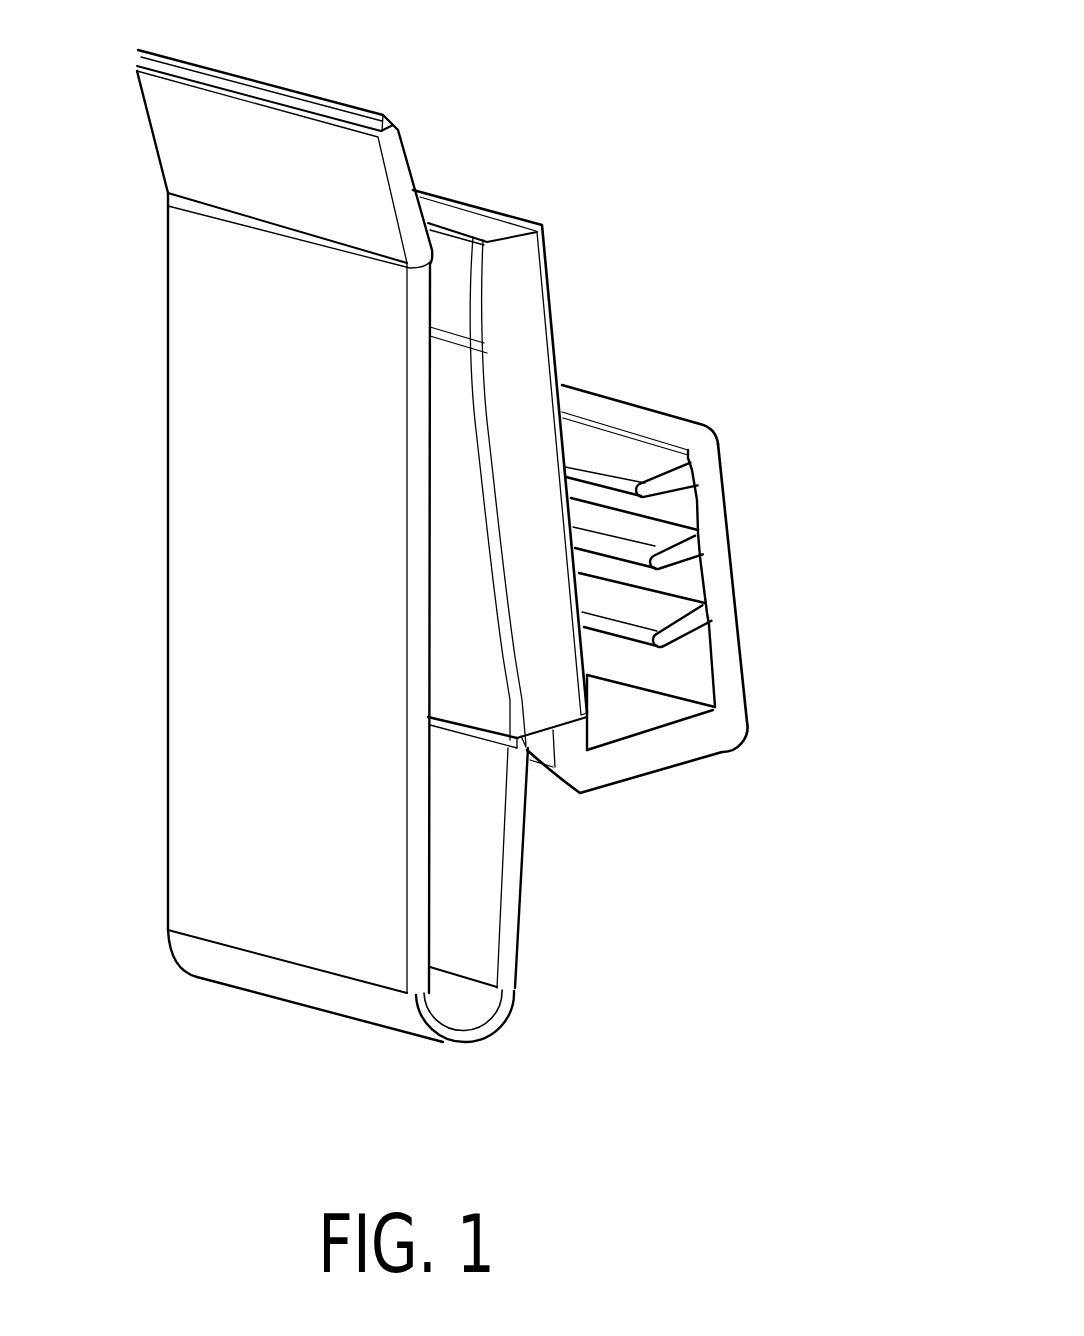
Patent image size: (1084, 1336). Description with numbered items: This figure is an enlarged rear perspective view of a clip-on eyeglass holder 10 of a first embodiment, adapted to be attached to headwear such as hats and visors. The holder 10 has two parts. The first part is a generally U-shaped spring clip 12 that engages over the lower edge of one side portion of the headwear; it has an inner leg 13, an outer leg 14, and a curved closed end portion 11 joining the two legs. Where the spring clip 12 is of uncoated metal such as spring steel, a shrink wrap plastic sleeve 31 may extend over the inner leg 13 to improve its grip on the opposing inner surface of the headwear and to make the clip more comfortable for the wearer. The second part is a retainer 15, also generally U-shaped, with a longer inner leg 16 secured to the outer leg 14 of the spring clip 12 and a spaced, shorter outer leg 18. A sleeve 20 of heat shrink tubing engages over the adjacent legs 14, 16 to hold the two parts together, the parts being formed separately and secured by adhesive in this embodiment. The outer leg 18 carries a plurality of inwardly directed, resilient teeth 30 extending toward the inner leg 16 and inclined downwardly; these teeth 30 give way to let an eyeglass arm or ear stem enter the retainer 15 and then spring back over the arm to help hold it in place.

The clip-on eyeglass holder 10 is at (853, 404).
The curved closed end portion 11 is at (453, 1047).
The spring clip 12 is at (184, 973).
The inner leg 13 is at (183, 52).
The outer leg 14 is at (468, 992).
The retainer 15 is at (674, 389).
The inner leg 16 is at (573, 733).
The outer leg 18 is at (722, 592).
The sleeve 20 is at (520, 325).
The teeth 30 is at (672, 490).
The shrink wrap plastic sleeve 31 is at (190, 628).